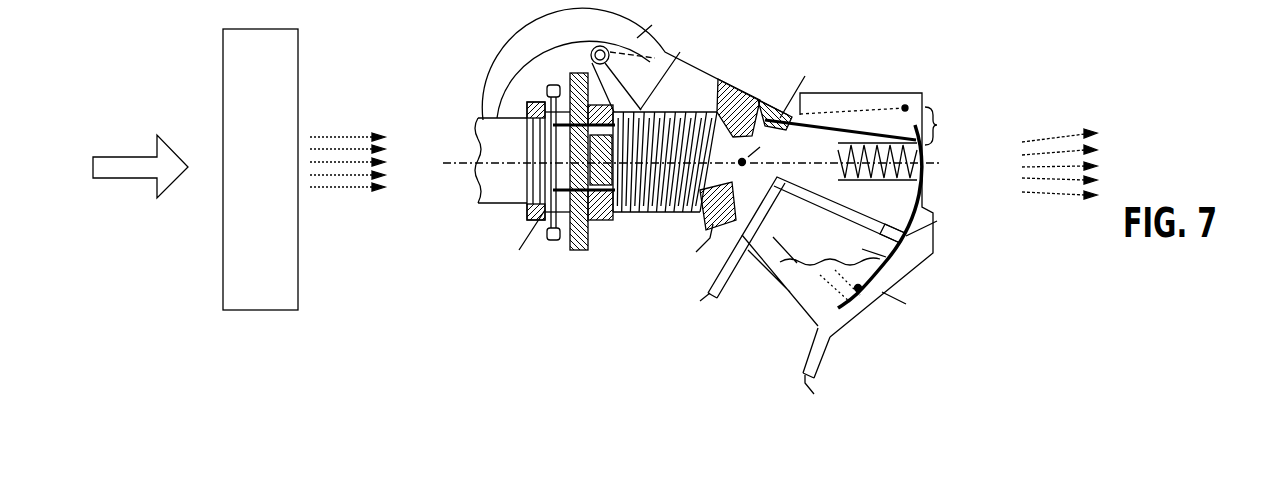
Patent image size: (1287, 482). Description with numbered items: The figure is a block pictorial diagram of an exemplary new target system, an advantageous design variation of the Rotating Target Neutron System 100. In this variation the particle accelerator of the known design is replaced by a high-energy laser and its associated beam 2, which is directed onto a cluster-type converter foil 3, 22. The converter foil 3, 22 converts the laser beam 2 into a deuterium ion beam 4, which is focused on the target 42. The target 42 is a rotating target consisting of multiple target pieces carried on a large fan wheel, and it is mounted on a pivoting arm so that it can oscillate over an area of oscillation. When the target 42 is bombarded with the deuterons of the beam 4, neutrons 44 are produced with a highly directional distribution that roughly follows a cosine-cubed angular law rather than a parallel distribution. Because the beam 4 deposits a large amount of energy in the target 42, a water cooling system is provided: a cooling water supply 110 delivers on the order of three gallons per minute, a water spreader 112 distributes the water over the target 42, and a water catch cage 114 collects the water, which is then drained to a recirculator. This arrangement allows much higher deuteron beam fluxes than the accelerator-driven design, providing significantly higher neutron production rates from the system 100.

The laser beam 2 is at (132, 123).
The converter foil 3 is at (260, 169).
The converter foil 22 is at (280, 58).
The deuterium beam 4 is at (355, 131).
The neutrons 44 is at (1059, 141).
The Rotating Target Neutron System 100 is at (801, 205).
The cooling water supply 110 is at (762, 275).
The water spreader 112 is at (962, 213).
The water catch cage 114 is at (888, 319).
The target 42 is at (893, 257).